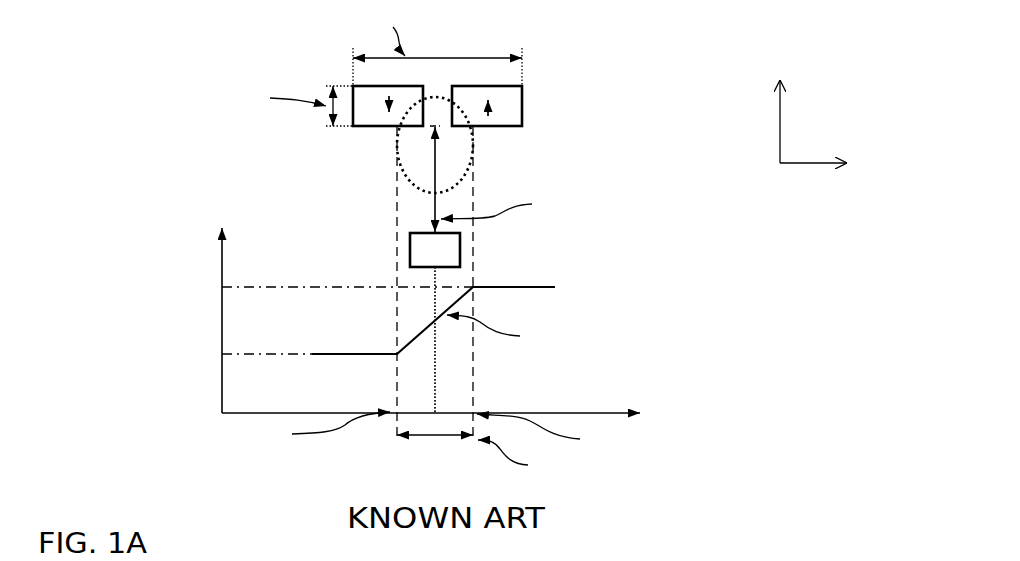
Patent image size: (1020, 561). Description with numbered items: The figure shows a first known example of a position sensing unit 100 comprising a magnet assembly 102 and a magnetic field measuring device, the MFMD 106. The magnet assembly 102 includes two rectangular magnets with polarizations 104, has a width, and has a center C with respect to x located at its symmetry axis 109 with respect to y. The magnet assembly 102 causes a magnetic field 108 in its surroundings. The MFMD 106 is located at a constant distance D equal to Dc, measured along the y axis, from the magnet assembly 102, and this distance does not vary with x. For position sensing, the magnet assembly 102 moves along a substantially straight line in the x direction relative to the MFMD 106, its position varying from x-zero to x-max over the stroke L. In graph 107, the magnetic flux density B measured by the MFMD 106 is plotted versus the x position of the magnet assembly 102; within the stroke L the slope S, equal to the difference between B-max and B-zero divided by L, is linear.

The position sensing unit 100 is at (102, 93).
The magnet assembly 102 is at (523, 105).
The polarizations 104 is at (475, 106).
The MFMD 106 is at (463, 258).
The graph 107 is at (608, 282).
The magnetic field 108 is at (479, 153).
The symmetry axis 109 is at (431, 406).